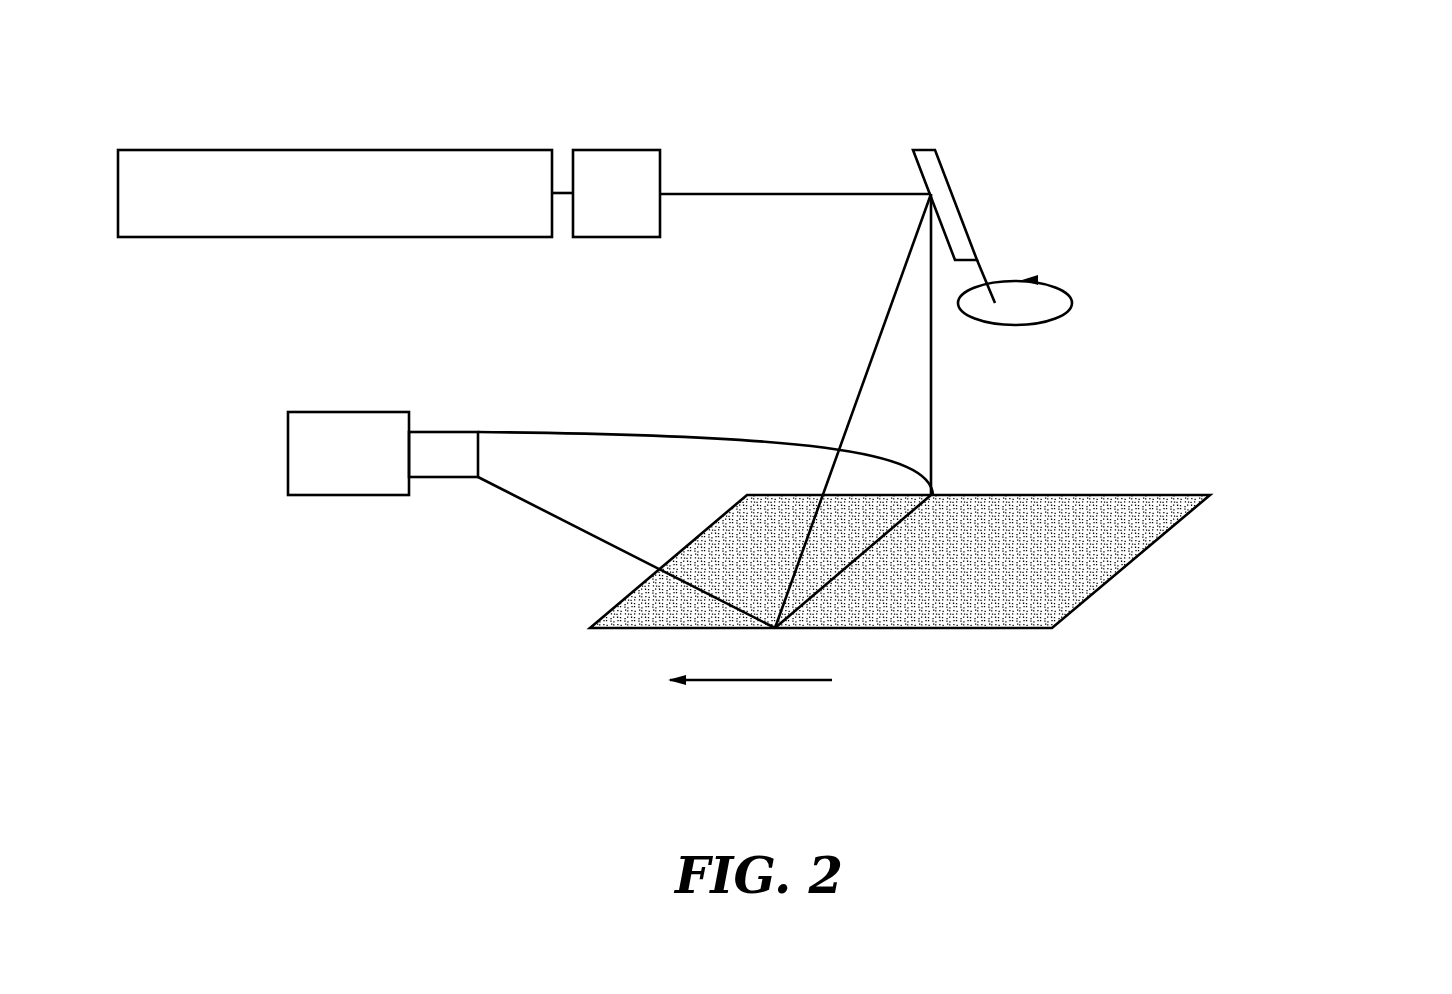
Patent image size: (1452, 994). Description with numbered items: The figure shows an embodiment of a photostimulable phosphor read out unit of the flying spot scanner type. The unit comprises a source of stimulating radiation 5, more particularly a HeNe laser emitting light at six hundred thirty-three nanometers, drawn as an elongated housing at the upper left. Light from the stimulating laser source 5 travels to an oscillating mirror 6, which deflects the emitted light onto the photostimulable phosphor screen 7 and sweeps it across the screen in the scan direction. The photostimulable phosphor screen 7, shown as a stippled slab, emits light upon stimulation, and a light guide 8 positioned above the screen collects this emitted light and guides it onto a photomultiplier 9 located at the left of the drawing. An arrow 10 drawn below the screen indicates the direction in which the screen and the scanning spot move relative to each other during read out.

The source of stimulating radiation 5 is at (220, 158).
The oscillating mirror 6 is at (927, 157).
The photostimulable phosphor screen 7 is at (1061, 505).
The light guide 8 is at (627, 448).
The photomultiplier 9 is at (337, 420).
The scan direction arrow 10 is at (783, 680).